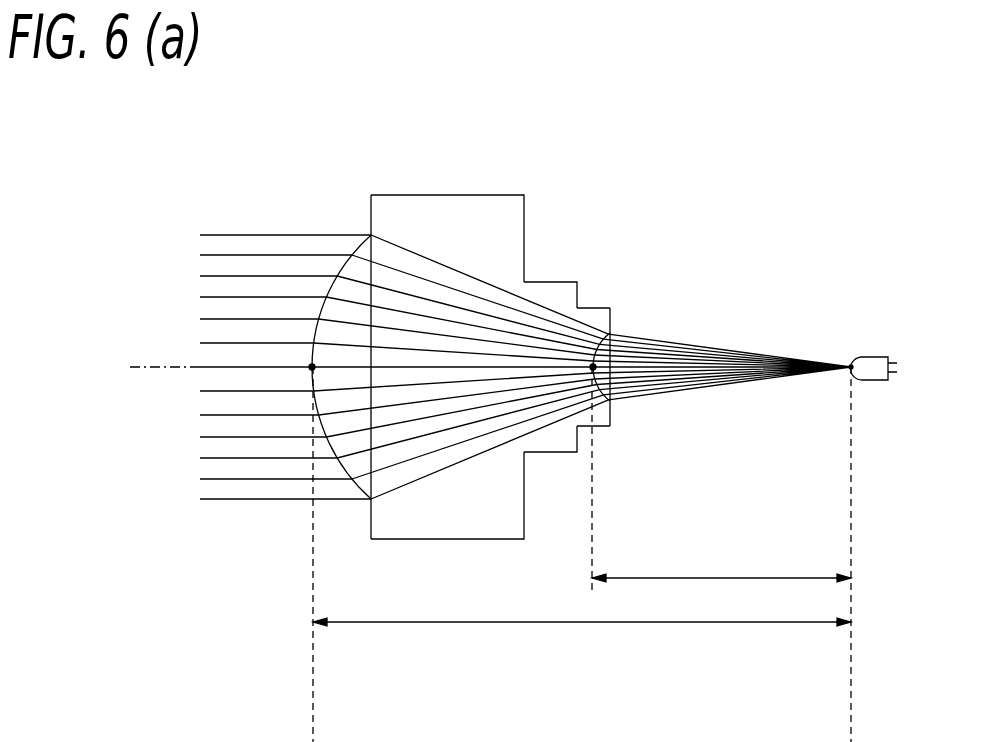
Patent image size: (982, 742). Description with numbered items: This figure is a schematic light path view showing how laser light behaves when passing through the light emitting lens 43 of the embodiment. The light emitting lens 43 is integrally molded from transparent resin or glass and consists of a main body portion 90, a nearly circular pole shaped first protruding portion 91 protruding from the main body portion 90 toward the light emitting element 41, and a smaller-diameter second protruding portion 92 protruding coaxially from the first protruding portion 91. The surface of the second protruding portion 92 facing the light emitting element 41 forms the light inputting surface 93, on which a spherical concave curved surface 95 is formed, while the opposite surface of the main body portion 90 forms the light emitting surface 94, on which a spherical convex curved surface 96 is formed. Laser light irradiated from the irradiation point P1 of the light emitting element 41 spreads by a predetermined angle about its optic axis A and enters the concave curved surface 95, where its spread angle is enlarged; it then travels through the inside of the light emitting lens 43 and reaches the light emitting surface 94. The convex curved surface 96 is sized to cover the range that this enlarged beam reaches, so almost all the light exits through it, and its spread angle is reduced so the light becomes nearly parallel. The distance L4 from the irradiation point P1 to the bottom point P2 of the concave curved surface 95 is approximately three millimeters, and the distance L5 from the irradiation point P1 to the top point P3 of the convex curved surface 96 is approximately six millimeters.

The light emitting lens 43 is at (416, 167).
The main body portion 90 is at (463, 195).
The first protruding portion 91 is at (550, 282).
The second protruding portion 92 is at (590, 308).
The light inputting surface 93 is at (610, 316).
The light emitting surface 94 is at (371, 213).
The concave curved surface 95 is at (603, 387).
The convex curved surface 96 is at (339, 268).
The irradiation point P1 is at (851, 365).
The bottom point P2 is at (593, 367).
The top point P3 is at (312, 367).
The optic axis A is at (155, 370).
The distance L4 is at (730, 578).
The distance L5 is at (458, 622).
The light emitting element 41 is at (873, 357).